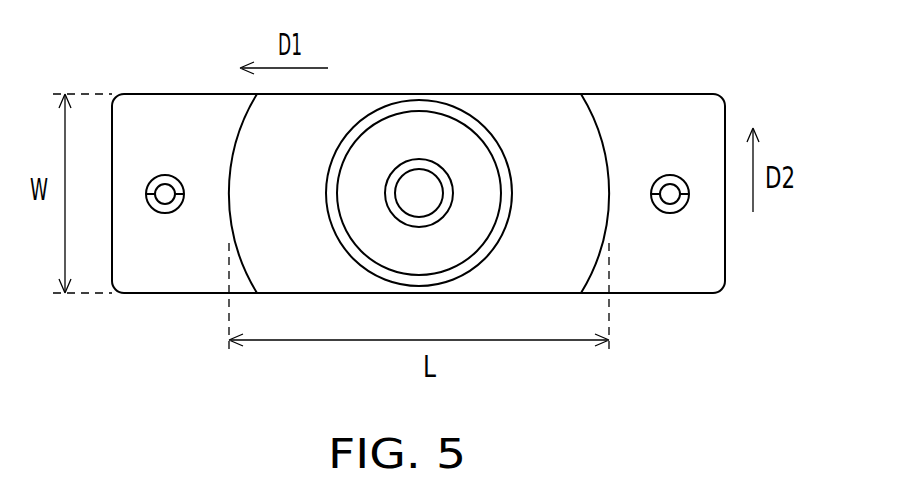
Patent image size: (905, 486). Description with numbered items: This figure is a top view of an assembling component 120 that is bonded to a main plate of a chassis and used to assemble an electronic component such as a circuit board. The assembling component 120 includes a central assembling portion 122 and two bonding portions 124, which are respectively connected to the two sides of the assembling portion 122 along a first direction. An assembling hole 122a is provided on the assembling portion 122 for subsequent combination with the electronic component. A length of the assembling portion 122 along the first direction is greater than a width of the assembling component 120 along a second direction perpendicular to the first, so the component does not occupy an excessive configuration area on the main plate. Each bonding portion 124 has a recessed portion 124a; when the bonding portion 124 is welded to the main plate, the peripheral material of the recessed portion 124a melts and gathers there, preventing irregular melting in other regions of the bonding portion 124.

The assembling component 120 is at (757, 246).
The assembling portion 122 is at (539, 115).
The assembling hole 122a is at (418, 170).
The bonding portion 124 is at (190, 115).
The recessed portion 124a is at (165, 196).